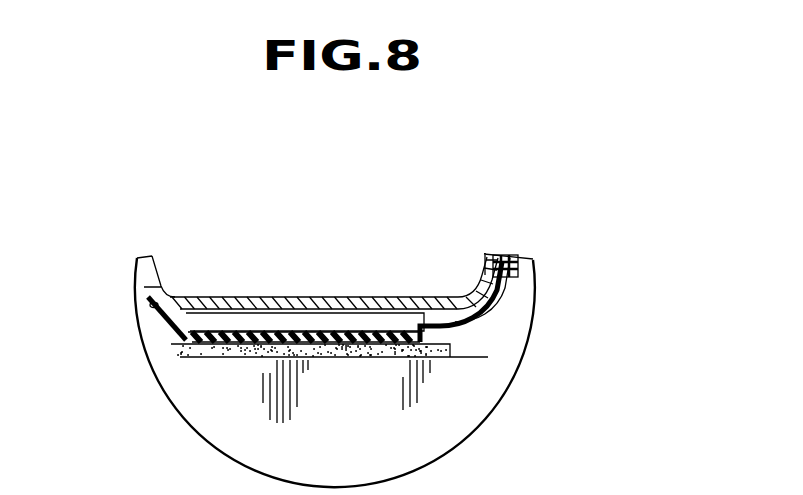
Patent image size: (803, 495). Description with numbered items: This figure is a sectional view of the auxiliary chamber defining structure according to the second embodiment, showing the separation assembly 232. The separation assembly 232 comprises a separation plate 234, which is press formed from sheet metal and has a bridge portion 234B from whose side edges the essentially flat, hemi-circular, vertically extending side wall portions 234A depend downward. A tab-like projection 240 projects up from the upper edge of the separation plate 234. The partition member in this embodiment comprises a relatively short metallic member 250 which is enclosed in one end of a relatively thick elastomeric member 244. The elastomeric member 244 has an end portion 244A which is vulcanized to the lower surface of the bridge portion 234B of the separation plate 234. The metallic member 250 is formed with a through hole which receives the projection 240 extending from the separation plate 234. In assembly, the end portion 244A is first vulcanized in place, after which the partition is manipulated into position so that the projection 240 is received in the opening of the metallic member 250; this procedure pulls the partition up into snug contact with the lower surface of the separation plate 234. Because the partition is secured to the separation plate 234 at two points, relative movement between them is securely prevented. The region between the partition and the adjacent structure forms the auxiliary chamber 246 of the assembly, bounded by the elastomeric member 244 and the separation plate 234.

The separation assembly 232 is at (268, 235).
The separation plate 234 is at (314, 292).
The side wall portions 234A is at (427, 395).
The bridge portion 234B is at (237, 296).
The tab-like projection 240 is at (518, 275).
The elastomeric member 244 is at (400, 330).
The end portion 244A is at (147, 305).
The intermediate layer 246 is at (342, 327).
The metallic member 250 is at (498, 325).